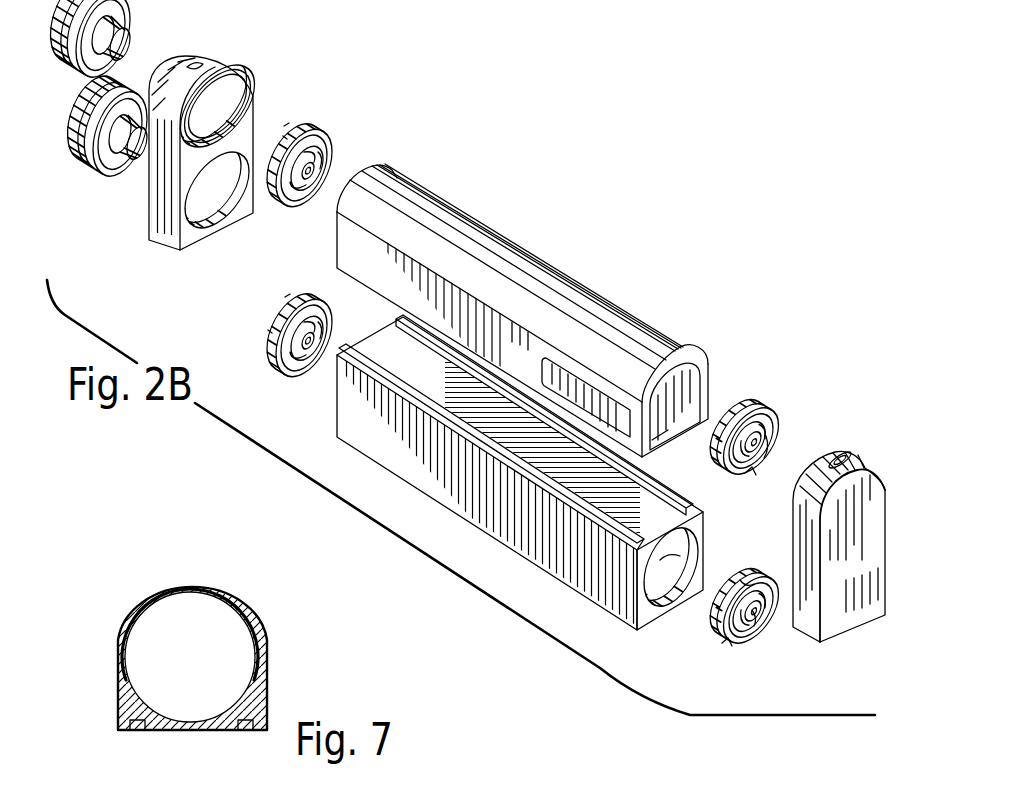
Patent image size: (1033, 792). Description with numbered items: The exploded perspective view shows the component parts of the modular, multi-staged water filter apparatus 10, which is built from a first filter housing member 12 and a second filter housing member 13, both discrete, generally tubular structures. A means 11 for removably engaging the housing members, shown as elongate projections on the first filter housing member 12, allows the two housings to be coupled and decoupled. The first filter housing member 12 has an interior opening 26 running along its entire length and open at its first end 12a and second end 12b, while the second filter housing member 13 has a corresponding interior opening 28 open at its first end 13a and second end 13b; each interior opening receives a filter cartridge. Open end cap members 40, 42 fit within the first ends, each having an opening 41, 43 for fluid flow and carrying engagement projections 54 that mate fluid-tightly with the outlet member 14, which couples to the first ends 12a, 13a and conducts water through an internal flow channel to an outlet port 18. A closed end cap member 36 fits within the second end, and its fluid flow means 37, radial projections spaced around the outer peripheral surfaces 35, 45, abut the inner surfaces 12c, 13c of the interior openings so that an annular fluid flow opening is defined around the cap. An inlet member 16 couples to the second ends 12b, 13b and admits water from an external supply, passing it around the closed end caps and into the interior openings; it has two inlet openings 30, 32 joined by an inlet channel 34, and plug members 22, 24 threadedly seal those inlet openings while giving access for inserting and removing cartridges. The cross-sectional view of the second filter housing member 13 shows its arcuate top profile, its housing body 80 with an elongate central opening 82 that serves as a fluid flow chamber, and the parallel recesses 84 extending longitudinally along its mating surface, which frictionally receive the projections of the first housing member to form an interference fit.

In FIG. 2B, the water filter apparatus 10 is at (582, 252).
In FIG. 2B, the means for removably engaging the first and second filter housing members 11 is at (376, 362).
In FIG. 2B, the first filter housing member 12 is at (515, 488).
In FIG. 2B, the first end of the first filter housing member 12a is at (646, 626).
In FIG. 2B, the second end of the first filter housing member 12b is at (323, 405).
In FIG. 2B, the inner surface of the interior opening of the first filter housing member 12c is at (706, 550).
In FIG. 2B, the second filter housing member 13 is at (526, 322).
In FIG. 7, the second filter housing member 13 is at (274, 608).
In FIG. 2B, the first end of the second filter housing member 13a is at (710, 408).
In FIG. 2B, the second end of the second filter housing member 13b is at (337, 243).
In FIG. 2B, the inner surface of the interior opening of the second filter housing member 13c is at (683, 433).
In FIG. 2B, the outlet member 14 is at (839, 530).
In FIG. 2B, the inlet member 16 is at (162, 236).
In FIG. 2B, the outlet port 18 is at (842, 455).
In FIG. 2B, the plug member 22 is at (118, 20).
In FIG. 2B, the plug member 24 is at (115, 170).
In FIG. 2B, the interior opening of the first filter housing member 26 is at (673, 606).
In FIG. 2B, the interior opening of the second filter housing member 28 is at (704, 372).
In FIG. 2B, the first inlet opening 30 is at (236, 82).
In FIG. 2B, the second inlet opening 32 is at (215, 215).
In FIG. 2B, the inlet channel 34 is at (243, 132).
In FIG. 2B, the outer peripheral surface of the closed end cap member 35 is at (293, 300).
In FIG. 2B, the closed end cap member 36 is at (330, 148).
In FIG. 2B, the fluid flow means 37 is at (280, 138).
In FIG. 2B, the open end cap member 40 is at (760, 398).
In FIG. 2B, the opening of the open end cap member 41 is at (773, 446).
In FIG. 2B, the open end cap member 42 is at (748, 652).
In FIG. 2B, the opening of the open end cap member 43 is at (760, 632).
In FIG. 2B, the outer peripheral surface of the closed end cap member 45 is at (751, 550).
In FIG. 2B, the engagement projection 54 is at (752, 468).
In FIG. 7, the housing body 80 is at (262, 693).
In FIG. 7, the elongate central opening 82 is at (212, 658).
In FIG. 7, the parallel recesses 84 is at (140, 731).